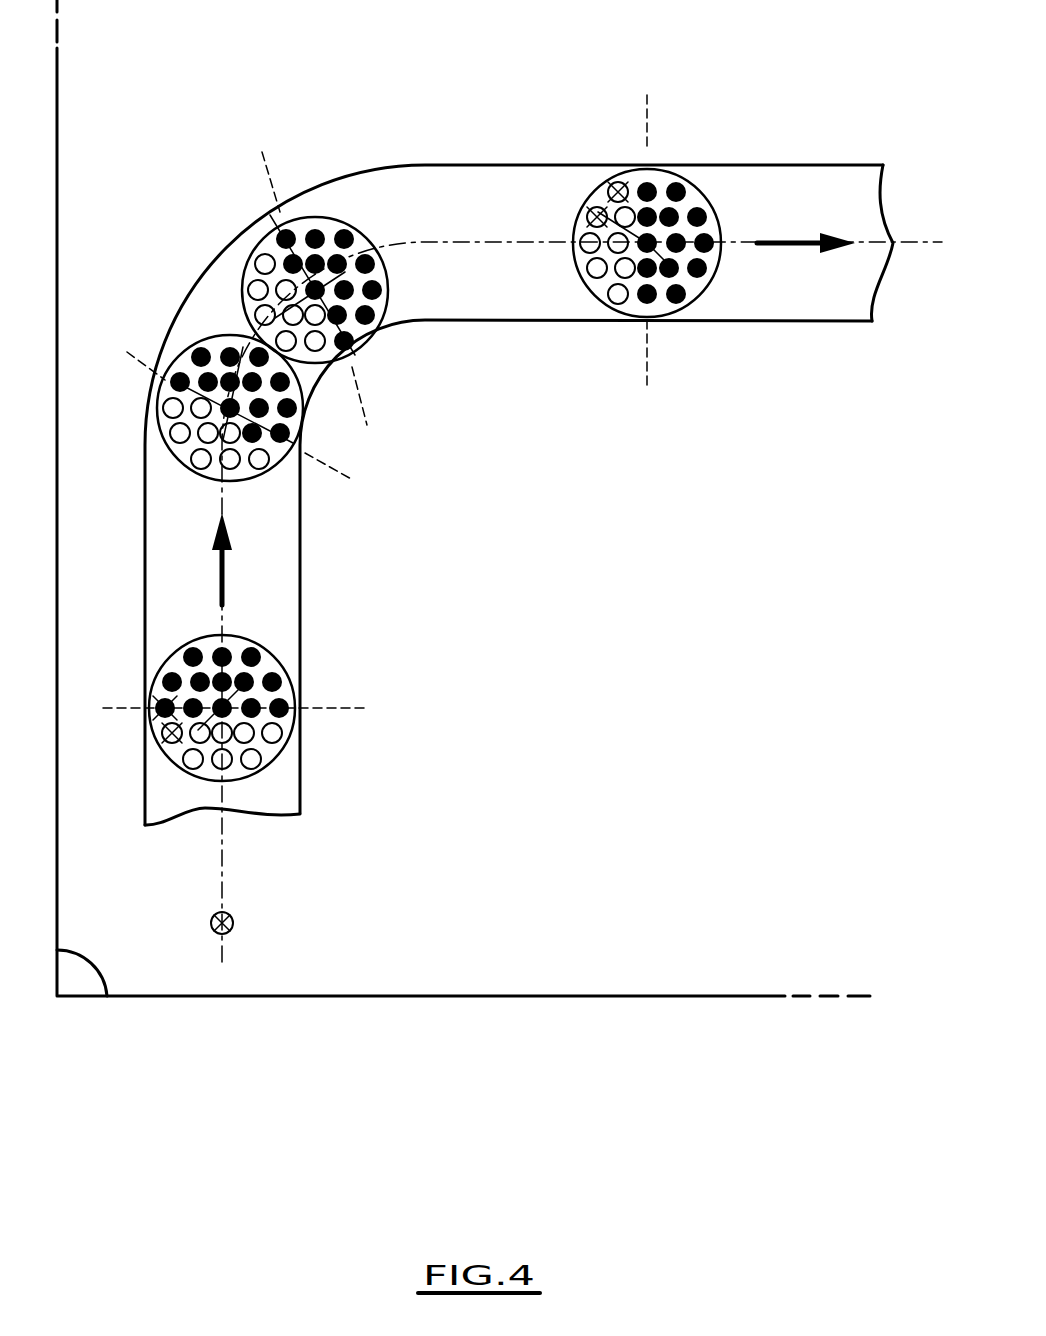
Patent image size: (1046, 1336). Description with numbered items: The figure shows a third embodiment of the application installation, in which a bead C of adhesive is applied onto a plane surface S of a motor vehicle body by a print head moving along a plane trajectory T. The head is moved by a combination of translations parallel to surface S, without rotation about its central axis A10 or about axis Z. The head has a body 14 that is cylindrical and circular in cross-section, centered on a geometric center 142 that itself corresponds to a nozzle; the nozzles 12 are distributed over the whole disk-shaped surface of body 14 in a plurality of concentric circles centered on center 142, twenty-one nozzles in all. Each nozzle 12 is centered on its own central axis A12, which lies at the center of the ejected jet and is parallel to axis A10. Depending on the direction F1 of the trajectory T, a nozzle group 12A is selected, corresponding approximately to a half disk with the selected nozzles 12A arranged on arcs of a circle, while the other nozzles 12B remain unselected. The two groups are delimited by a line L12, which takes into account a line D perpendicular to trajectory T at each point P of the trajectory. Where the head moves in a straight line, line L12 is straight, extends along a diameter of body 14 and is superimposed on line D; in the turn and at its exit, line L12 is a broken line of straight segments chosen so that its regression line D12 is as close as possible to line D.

The nozzles 12 is at (390, 592).
The nozzle group 12A is at (345, 235).
The other nozzles 12B is at (256, 289).
The body 14 is at (238, 767).
The geometric center 142 is at (178, 757).
The central axis A10 is at (222, 708).
The central axis of a nozzle A12 is at (170, 735).
The bead C is at (270, 530).
The line D is at (147, 369).
The regression line D12 is at (360, 370).
The line L12 is at (417, 475).
The direction F1 is at (533, 401).
The point P is at (210, 925).
The axis Z is at (235, 918).
The surface S is at (463, 498).
The trajectory T is at (920, 243).